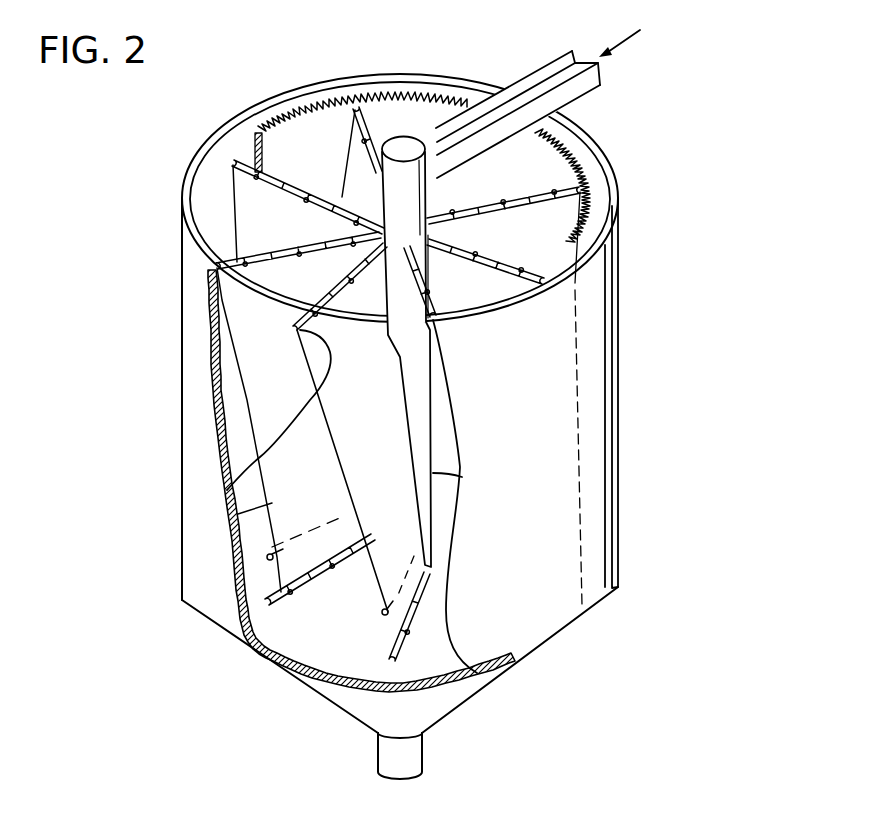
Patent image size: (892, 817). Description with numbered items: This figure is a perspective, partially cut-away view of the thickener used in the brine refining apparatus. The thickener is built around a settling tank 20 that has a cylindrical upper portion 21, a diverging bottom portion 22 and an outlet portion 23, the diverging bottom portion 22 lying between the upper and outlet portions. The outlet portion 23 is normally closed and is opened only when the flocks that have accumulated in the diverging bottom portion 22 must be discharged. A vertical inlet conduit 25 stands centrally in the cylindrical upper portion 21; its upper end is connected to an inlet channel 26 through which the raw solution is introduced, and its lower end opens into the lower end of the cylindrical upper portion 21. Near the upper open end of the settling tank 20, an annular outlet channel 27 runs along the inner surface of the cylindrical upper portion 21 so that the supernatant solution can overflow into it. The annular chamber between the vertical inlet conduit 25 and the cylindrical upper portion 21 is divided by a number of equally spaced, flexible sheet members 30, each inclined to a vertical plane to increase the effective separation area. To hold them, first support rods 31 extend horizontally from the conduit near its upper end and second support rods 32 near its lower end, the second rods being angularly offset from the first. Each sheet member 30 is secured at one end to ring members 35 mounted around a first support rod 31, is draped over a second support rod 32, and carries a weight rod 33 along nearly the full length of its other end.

The settling tank 20 is at (648, 388).
The cylindrical upper portion 21 is at (622, 512).
The diverging bottom portion 22 is at (478, 687).
The outlet portion 23 is at (423, 750).
The vertical inlet conduit 25 is at (398, 147).
The inlet channel 26 is at (600, 93).
The annular outlet channel 27 is at (303, 104).
The sheet members 30 is at (253, 397).
The first support rods 31 is at (227, 490).
The second support rods 32 is at (267, 560).
The weight rod 33 is at (247, 640).
The ring members 35 is at (217, 268).